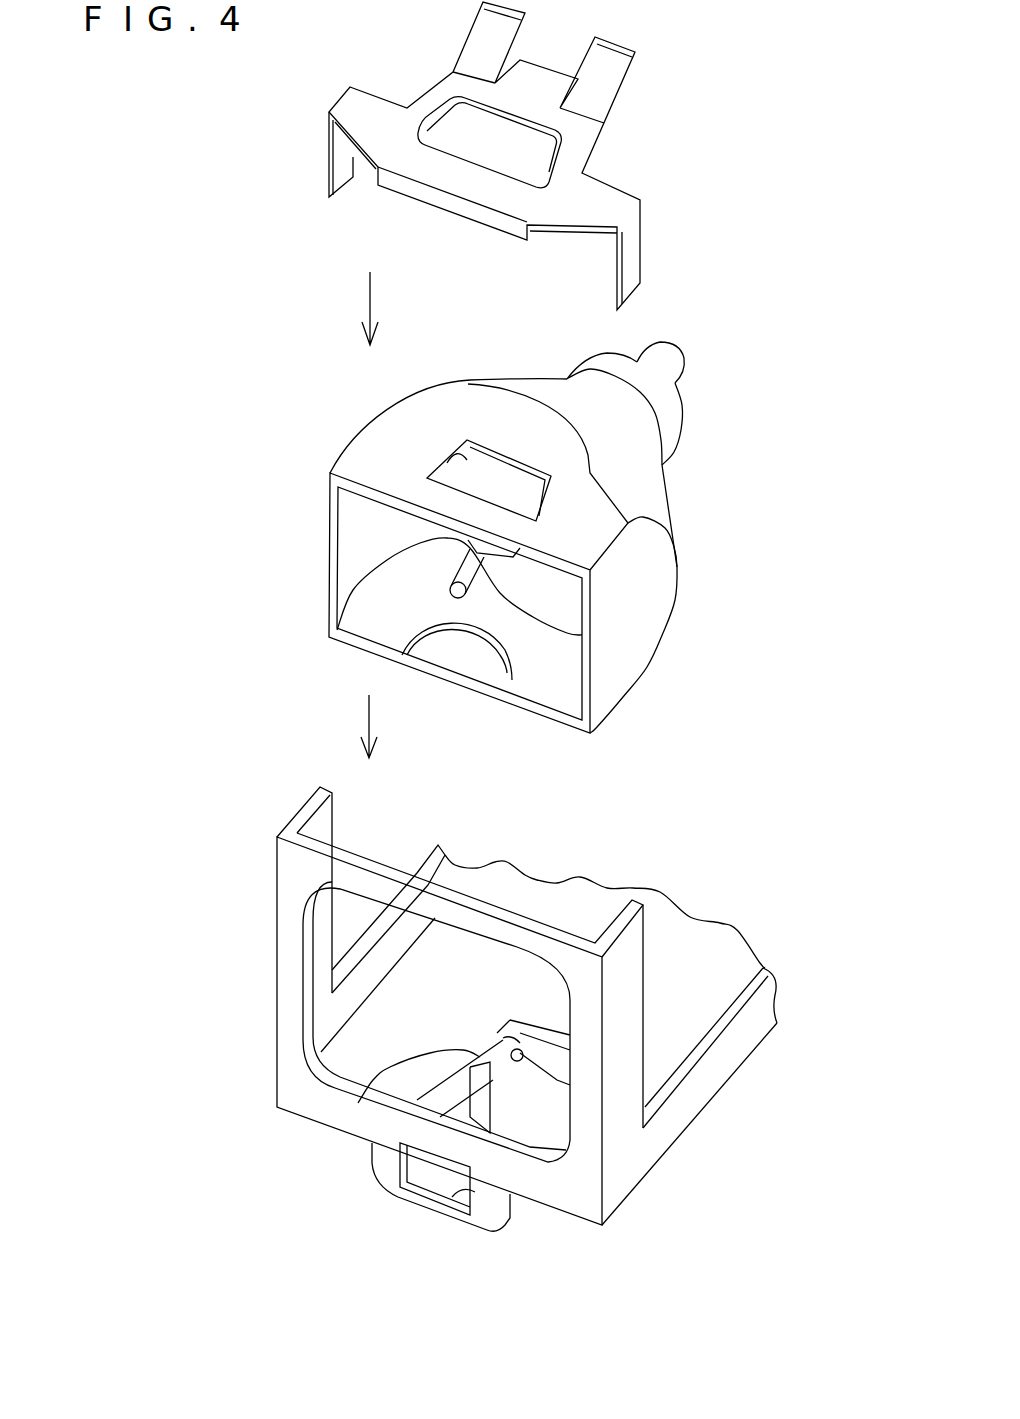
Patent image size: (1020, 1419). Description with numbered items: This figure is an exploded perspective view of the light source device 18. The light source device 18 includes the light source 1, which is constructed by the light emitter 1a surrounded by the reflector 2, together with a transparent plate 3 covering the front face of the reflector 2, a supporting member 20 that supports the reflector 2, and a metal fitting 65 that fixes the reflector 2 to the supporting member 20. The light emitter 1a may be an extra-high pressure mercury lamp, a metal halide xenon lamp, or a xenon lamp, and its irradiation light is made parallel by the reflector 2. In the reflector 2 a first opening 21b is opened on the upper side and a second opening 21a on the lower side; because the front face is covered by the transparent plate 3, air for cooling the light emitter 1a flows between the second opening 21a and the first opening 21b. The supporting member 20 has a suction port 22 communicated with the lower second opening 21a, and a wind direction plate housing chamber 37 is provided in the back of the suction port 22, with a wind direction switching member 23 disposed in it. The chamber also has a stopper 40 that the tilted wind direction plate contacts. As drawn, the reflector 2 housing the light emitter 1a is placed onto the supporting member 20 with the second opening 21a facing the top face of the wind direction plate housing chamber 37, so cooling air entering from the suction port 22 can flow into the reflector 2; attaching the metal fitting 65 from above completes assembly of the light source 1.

The metal fitting 65 is at (585, 143).
The light source 1 is at (524, 538).
The light emitter 1a is at (582, 635).
The reflector 2 is at (657, 578).
The transparent plate 3 is at (345, 565).
The second opening 21a is at (487, 680).
The first opening 21b is at (463, 458).
The light source device 18 is at (765, 763).
The supporting member 20 is at (715, 1070).
The suction port 22 is at (467, 1190).
The wind direction switching member 23 is at (490, 1033).
The wind direction plate housing chamber 37 is at (477, 1040).
The stopper 40 is at (423, 1193).